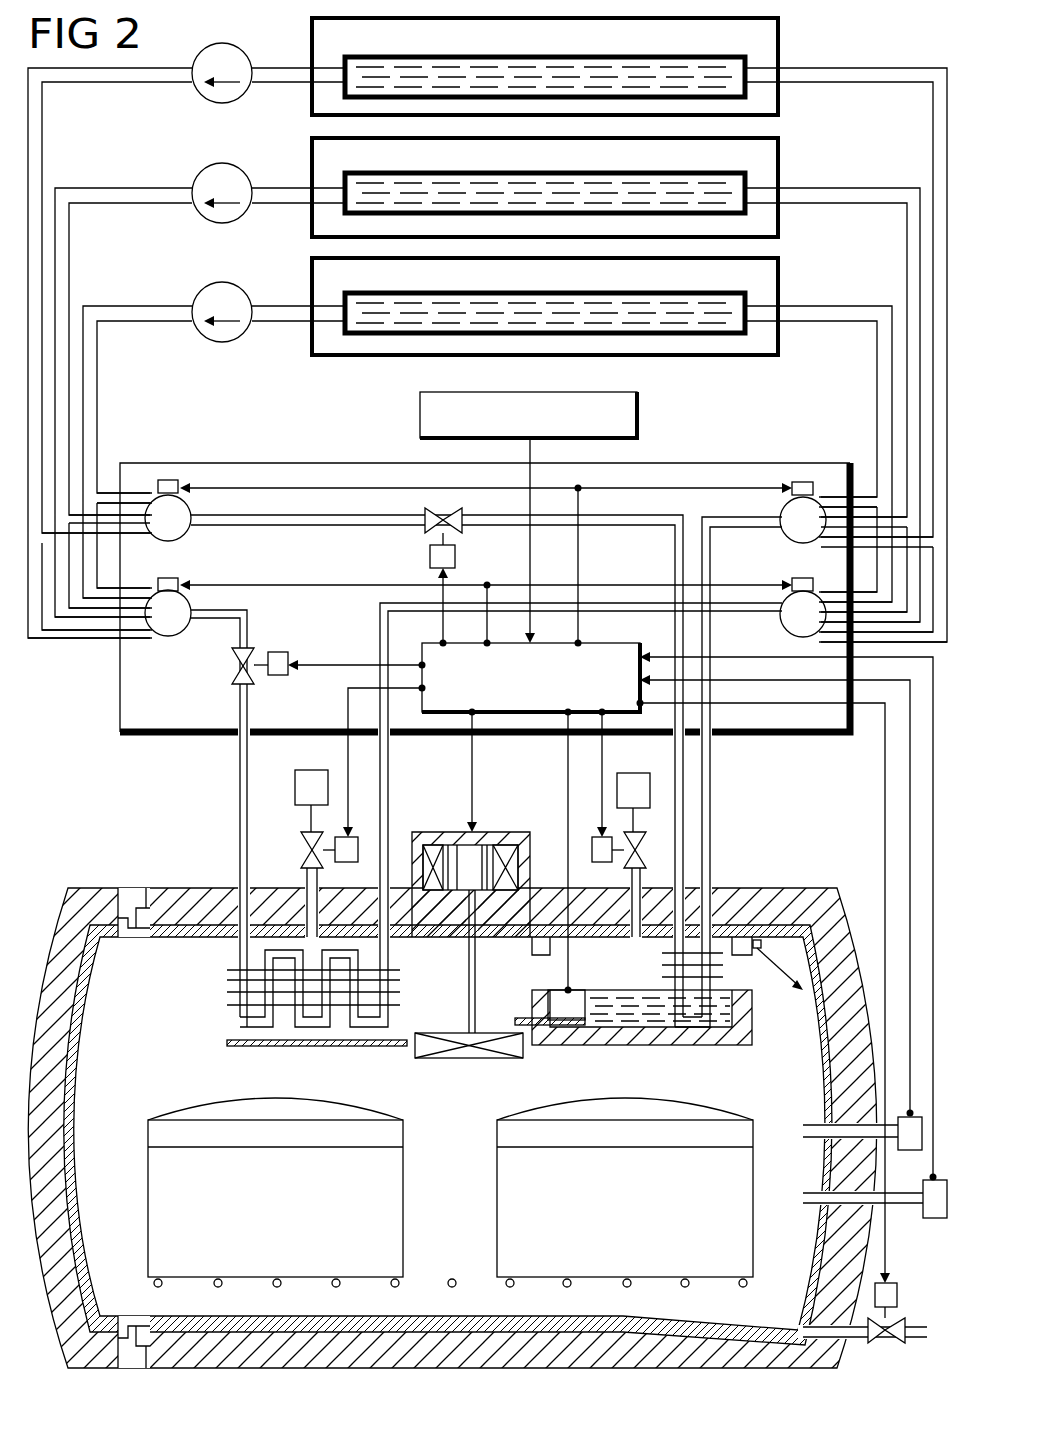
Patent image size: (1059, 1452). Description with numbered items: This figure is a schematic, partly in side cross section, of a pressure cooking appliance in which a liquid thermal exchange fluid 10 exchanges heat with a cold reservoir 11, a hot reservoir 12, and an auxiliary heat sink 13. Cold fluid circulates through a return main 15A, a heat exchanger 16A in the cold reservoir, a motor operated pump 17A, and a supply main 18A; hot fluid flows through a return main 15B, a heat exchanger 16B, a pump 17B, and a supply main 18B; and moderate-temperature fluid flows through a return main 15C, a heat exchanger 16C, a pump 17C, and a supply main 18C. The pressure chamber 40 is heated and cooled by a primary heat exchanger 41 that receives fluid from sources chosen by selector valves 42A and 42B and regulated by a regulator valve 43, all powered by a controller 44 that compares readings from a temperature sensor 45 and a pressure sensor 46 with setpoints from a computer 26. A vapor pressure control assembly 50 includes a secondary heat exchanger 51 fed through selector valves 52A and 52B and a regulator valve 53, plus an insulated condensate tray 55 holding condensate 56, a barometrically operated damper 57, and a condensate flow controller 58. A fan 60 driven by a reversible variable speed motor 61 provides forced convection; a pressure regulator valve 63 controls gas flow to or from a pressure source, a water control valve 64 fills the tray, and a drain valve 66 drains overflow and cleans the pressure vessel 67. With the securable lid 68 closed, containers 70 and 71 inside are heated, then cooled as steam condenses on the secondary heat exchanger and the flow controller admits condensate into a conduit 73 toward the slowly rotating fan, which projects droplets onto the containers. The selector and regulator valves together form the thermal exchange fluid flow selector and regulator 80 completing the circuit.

The thermal exchange fluid 10 is at (368, 60).
The cold reservoir 11 is at (314, 20).
The hot reservoir 12 is at (316, 269).
The auxiliary heat sink 13 is at (316, 149).
The return main 15A is at (929, 107).
The return main 15B is at (870, 346).
The return main 15C is at (900, 220).
The heat exchanger 16A is at (710, 60).
The heat exchanger 16B is at (710, 300).
The heat exchanger 16C is at (710, 180).
The motor operated pump 17A is at (240, 100).
The motor operated pump 17B is at (237, 340).
The motor operated pump 17C is at (240, 220).
The supply main 18A is at (43, 105).
The supply main 18B is at (96, 345).
The supply main 18C is at (68, 225).
The computer 26 is at (636, 416).
The pressure chamber 40 is at (460, 1226).
The primary heat exchanger 41 is at (230, 1026).
The selector valve 42A is at (190, 645).
The selector valve 42B is at (786, 640).
The regulator valve 43 is at (255, 650).
The controller 44 is at (422, 645).
The temperature sensor 45 is at (922, 1150).
The pressure sensor 46 is at (925, 1221).
The vapor pressure control assembly 50 is at (631, 981).
The secondary heat exchanger 51 is at (721, 973).
The selector valve 52A is at (180, 546).
The selector valve 52B is at (788, 546).
The regulator valve 53 is at (426, 536).
The condensate tray 55 is at (740, 1044).
The condensate 56 is at (653, 1034).
The barometrically operated damper 57 is at (806, 993).
The condensate flow controller 58 is at (552, 982).
The fan 60 is at (450, 1032).
The reversible variable speed motor 61 is at (492, 816).
The pressure regulator valve 63 is at (306, 867).
The water control valve 64 is at (622, 870).
The drain valve 66 is at (884, 1342).
The pressure vessel 67 is at (467, 1315).
The securable lid 68 is at (82, 1014).
The container 70 is at (637, 1228).
The container 71 is at (284, 1228).
The conduit 73 is at (517, 1022).
The thermal exchange fluid flow selector and regulator 80 is at (100, 699).